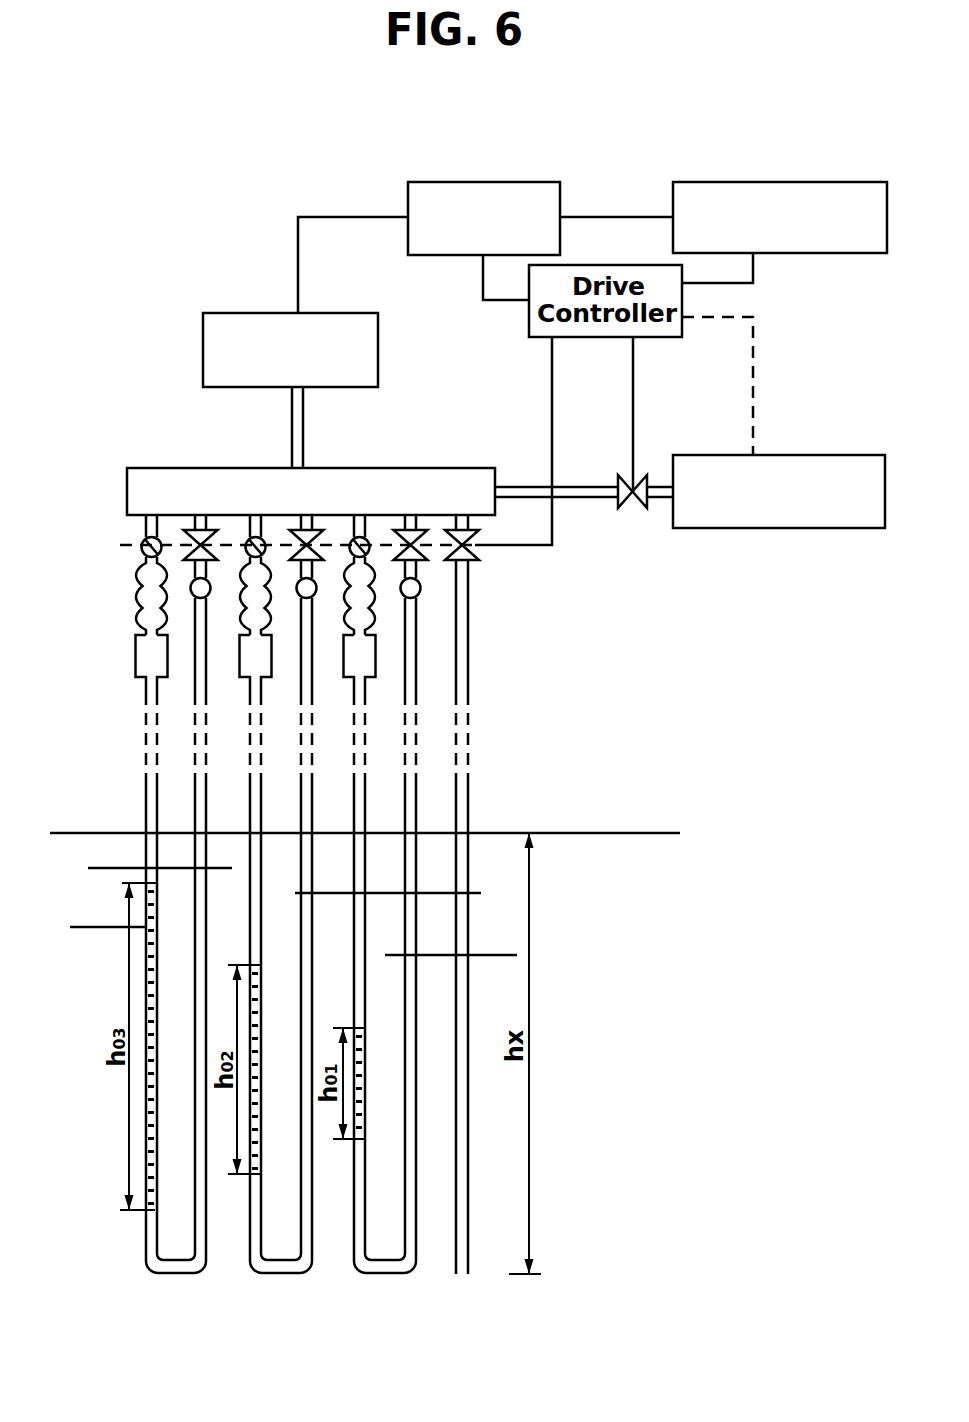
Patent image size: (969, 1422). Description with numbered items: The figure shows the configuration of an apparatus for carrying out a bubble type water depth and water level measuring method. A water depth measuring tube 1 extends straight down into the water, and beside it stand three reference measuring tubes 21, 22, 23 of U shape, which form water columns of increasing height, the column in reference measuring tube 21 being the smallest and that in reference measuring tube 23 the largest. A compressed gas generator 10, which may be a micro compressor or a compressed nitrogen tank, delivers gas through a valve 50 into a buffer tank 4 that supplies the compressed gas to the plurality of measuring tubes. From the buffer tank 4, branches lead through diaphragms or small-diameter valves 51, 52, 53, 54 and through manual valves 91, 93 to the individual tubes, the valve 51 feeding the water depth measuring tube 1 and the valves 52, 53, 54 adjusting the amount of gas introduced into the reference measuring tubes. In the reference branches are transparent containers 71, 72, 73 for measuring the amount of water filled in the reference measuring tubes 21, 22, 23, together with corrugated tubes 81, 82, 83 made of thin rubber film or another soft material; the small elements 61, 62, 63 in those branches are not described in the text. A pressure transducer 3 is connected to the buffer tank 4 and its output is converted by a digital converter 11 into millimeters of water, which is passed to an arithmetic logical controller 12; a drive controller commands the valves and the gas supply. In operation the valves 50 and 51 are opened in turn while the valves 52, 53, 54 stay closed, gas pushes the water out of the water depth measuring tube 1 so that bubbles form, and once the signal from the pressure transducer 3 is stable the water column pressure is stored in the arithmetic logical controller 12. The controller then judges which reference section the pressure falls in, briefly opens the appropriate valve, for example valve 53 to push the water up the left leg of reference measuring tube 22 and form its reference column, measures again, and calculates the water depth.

The water depth measuring tube 1 is at (464, 1026).
The reference measuring tube 21 is at (410, 1075).
The reference measuring tube 22 is at (312, 985).
The reference measuring tube 23 is at (204, 943).
The pressure transducer 3 is at (246, 313).
The buffer tank 4 is at (154, 468).
The compressed gas generator 10 is at (820, 455).
The digital converter 11 is at (483, 182).
The arithmetic logical controller 12 is at (784, 182).
The diaphragm (valve) 50 is at (638, 508).
The diaphragm (valve) 51 is at (480, 554).
The diaphragm (valve) 52 is at (397, 550).
The diaphragm (valve) 53 is at (293, 550).
The diaphragm (valve) 54 is at (187, 550).
The flow restrictor 61 is at (403, 596).
The flow restrictor 62 is at (299, 596).
The flow restrictor 63 is at (193, 596).
The transparent container 71 is at (343, 658).
The transparent container 72 is at (239, 658).
The transparent container 73 is at (135, 655).
The corrugated tube 81 is at (346, 598).
The corrugated tube 82 is at (242, 598).
The corrugated tube 83 is at (137, 598).
The manual valve 91 is at (352, 549).
The manual valve 93 is at (141, 546).